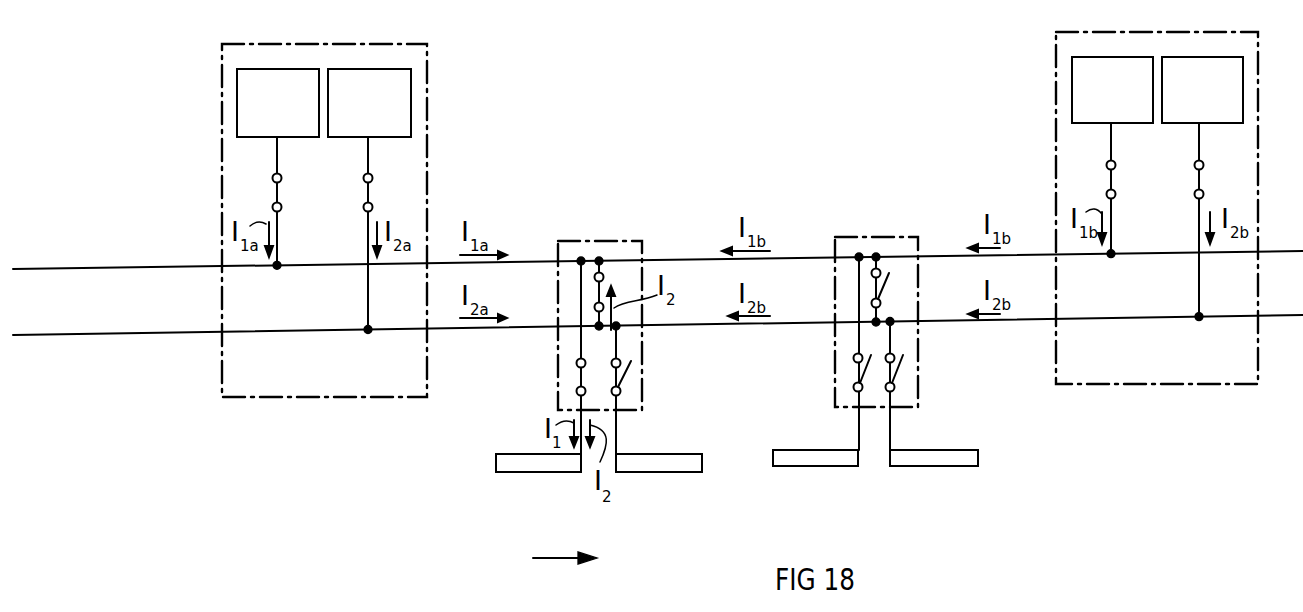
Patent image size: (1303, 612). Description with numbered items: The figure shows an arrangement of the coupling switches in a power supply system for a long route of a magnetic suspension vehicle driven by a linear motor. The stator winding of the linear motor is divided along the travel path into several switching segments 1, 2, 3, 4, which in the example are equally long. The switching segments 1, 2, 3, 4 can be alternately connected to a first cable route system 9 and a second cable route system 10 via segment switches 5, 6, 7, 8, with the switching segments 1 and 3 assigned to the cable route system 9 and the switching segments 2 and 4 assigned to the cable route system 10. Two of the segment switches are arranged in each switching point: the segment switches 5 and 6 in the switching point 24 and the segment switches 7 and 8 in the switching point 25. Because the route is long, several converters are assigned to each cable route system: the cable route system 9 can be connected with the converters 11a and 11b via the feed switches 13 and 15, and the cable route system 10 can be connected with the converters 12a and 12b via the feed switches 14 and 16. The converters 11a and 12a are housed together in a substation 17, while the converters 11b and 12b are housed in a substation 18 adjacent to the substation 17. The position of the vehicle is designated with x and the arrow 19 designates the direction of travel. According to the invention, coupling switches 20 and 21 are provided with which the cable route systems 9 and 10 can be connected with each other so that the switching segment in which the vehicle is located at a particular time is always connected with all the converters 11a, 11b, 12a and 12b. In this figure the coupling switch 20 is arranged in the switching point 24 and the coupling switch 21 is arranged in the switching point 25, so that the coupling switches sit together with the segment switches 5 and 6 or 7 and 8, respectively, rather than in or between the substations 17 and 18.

The switching segment 1 is at (548, 472).
The switching segment 2 is at (655, 472).
The switching segment 3 is at (828, 466).
The switching segment 4 is at (925, 466).
The segment switch 5 is at (581, 376).
The segment switch 6 is at (632, 377).
The segment switch 7 is at (858, 373).
The segment switch 8 is at (903, 370).
The first cable route system 9 is at (1278, 220).
The second cable route system 10 is at (1275, 316).
The converter 11a is at (237, 113).
The converter 12a is at (411, 103).
The converter 11b is at (1072, 100).
The converter 12b is at (1243, 97).
The feed switch 13 is at (277, 185).
The feed switch 14 is at (368, 190).
The feed switch 15 is at (1111, 180).
The feed switch 16 is at (1199, 180).
The substation 17 is at (298, 44).
The substation 18 is at (1135, 32).
The arrow 19 is at (540, 561).
The coupling switch 20 is at (607, 290).
The coupling switch 21 is at (888, 287).
The switching point 24 is at (587, 240).
The switching point 25 is at (864, 238).